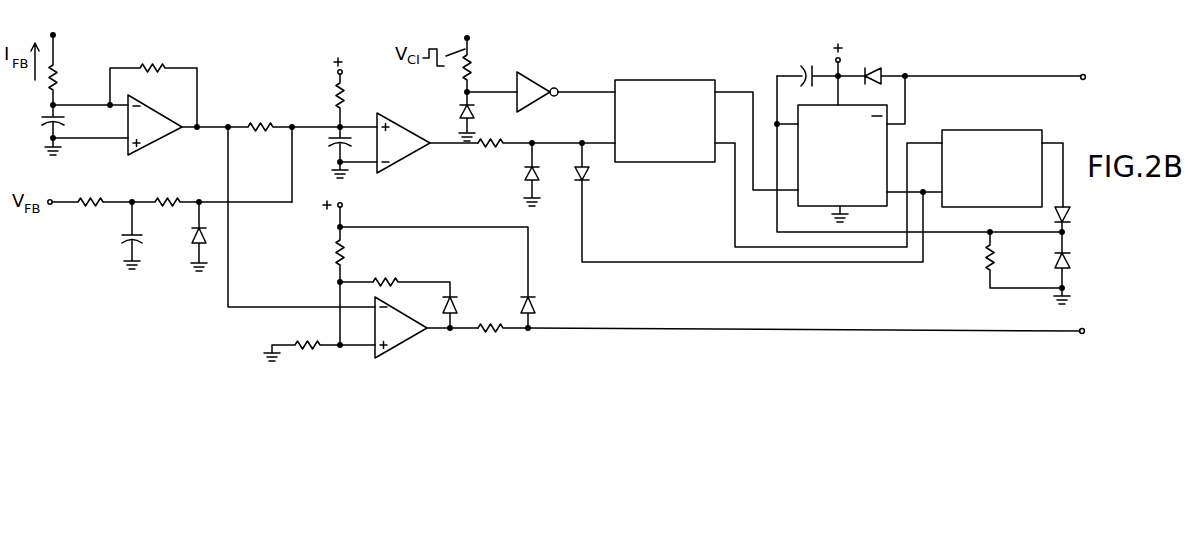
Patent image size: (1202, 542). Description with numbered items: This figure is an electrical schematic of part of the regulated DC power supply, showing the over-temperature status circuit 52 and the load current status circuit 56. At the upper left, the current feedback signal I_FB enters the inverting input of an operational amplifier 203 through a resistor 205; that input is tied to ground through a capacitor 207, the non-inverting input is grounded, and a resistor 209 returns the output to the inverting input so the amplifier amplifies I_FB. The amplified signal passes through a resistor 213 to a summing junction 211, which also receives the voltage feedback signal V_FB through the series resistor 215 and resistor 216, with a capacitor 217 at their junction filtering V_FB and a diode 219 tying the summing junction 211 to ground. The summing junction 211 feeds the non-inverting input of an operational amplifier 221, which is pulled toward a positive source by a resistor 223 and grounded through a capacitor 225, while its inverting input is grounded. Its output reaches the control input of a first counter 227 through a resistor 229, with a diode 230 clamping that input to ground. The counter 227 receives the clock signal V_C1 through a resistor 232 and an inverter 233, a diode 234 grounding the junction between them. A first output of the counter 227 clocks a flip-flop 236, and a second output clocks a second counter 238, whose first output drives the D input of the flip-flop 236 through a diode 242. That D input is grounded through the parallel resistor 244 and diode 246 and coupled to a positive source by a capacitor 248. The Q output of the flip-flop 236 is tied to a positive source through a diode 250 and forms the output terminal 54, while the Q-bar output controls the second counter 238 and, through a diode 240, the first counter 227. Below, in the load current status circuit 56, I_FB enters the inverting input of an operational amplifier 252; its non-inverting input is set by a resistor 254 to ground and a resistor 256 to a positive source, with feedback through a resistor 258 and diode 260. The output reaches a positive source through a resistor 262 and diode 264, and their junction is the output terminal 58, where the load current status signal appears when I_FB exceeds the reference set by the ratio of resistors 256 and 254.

The operational amplifier 203 is at (143, 100).
The resistor 205 is at (60, 69).
The capacitor 207 is at (67, 124).
The resistor 209 is at (154, 64).
The summing junction 211 is at (285, 118).
The resistor 213 is at (250, 117).
The resistor 215 is at (91, 185).
The resistor 216 is at (169, 185).
The capacitor 217 is at (120, 236).
The diode 219 is at (192, 232).
The operational amplifier 221 is at (393, 108).
The resistor 223 is at (335, 94).
The capacitor 225 is at (334, 163).
The first counter 227 is at (630, 78).
The resistor 229 is at (485, 152).
The diode 230 is at (523, 174).
The resistor 232 is at (462, 77).
The inverter 233 is at (537, 101).
The diode 234 is at (456, 110).
The flip-flop 236 is at (822, 212).
The second counter 238 is at (983, 128).
The diode 240 is at (592, 181).
The diode 242 is at (1054, 212).
The resistor 244 is at (987, 255).
The diode 246 is at (1052, 256).
The capacitor 248 is at (806, 66).
The diode 250 is at (872, 66).
The operational amplifier 252 is at (392, 306).
The resistor 254 is at (302, 336).
The resistor 256 is at (336, 246).
The resistor 258 is at (388, 278).
The diode 260 is at (455, 305).
The resistor 262 is at (487, 337).
The diode 264 is at (535, 300).
The over-temperature status circuit 52 is at (550, 69).
The output terminal 54 is at (1084, 76).
The load current status circuit 56 is at (474, 363).
The output terminal 58 is at (1082, 334).